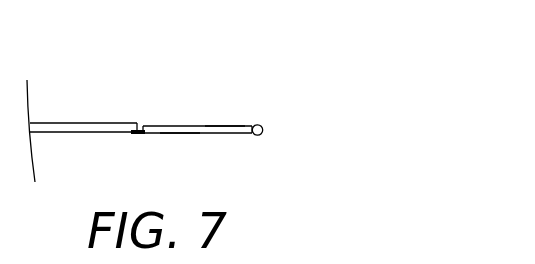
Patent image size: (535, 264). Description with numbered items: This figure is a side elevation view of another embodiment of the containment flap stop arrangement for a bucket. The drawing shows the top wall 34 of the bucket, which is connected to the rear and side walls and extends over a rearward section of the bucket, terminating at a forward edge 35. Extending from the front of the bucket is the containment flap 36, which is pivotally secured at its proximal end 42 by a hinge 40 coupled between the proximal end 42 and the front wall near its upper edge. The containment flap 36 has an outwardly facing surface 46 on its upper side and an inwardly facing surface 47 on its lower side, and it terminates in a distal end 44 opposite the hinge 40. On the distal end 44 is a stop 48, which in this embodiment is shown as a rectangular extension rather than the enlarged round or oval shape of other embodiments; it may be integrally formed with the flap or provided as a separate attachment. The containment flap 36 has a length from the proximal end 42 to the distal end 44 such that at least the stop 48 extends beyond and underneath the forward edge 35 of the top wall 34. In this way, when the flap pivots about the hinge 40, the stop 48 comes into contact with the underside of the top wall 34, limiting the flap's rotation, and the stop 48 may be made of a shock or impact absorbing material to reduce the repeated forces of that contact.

The top wall 34 is at (56, 113).
The forward edge 35 is at (136, 123).
The containment flap 36 is at (189, 117).
The hinge 40 is at (261, 125).
The proximal end 42 is at (247, 134).
The distal end 44 is at (143, 125).
The outwardly facing surface 46 is at (223, 125).
The inwardly facing surface 47 is at (179, 136).
The stop 48 is at (138, 134).